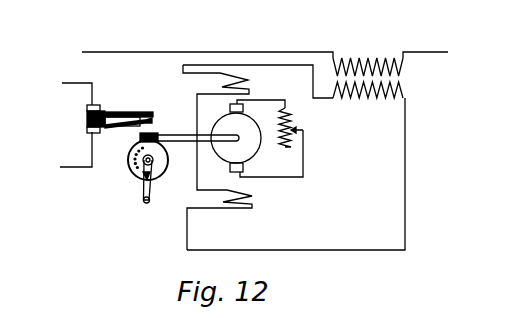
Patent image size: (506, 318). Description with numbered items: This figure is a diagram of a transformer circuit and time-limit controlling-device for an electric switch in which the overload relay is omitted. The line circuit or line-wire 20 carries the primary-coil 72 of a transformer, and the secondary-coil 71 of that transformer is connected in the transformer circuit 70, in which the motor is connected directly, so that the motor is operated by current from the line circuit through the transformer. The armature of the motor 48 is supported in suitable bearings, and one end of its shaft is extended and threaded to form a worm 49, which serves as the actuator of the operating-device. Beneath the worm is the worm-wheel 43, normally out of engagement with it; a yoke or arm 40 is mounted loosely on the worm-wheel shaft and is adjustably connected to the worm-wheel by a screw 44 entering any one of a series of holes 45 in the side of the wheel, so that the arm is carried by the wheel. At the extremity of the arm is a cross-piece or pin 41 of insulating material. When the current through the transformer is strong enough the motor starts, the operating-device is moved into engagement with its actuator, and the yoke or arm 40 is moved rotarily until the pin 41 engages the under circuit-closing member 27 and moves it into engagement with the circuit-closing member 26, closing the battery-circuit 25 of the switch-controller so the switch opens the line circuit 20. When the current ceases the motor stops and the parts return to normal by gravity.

The circuit or line-wire 20 is at (262, 52).
The battery-circuit 25 is at (75, 83).
The circuit-closing member 26 is at (128, 111).
The circuit-closing member 27 is at (127, 128).
The yoke or arm 40 is at (142, 194).
The cross-piece or pin 41 is at (146, 203).
The worm-wheel 43 is at (163, 172).
The screw 44 is at (142, 178).
The series of holes 45 is at (128, 165).
The armature of the motor 48 is at (183, 135).
The worm 49 is at (150, 133).
The transformer circuit 70 is at (321, 250).
The secondary-coil 71 is at (366, 94).
The primary-coil 72 is at (357, 60).